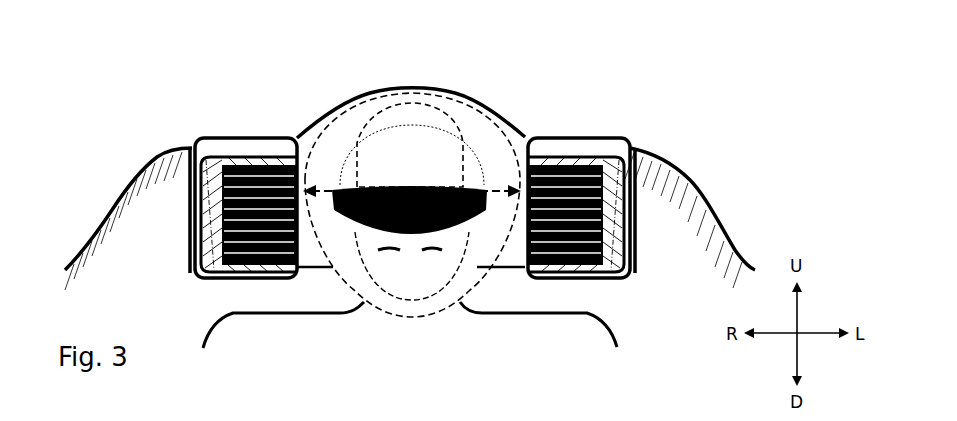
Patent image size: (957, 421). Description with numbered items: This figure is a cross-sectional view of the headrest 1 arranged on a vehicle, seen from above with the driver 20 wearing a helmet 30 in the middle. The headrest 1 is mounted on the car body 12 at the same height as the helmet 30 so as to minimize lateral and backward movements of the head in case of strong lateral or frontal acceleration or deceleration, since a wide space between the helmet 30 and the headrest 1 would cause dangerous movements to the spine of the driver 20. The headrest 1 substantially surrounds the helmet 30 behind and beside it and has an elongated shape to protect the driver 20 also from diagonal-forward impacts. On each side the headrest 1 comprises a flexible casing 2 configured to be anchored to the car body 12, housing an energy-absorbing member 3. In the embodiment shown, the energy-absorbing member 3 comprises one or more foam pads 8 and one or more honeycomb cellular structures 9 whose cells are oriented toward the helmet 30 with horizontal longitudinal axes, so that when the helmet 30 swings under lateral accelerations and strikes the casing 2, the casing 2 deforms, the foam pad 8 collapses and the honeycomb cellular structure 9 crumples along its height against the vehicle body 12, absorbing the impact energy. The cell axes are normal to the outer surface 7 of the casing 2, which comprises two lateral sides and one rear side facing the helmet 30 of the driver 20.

The headrest 1 is at (566, 105).
The flexible casing 2 is at (232, 153).
The energy-absorbing member 3 is at (217, 222).
The outer surface 7 is at (304, 178).
The foam pad 8 is at (198, 178).
The honeycomb cellular structure 9 is at (257, 160).
The car body 12 is at (162, 168).
The driver 20 is at (280, 337).
The helmet 30 is at (418, 97).